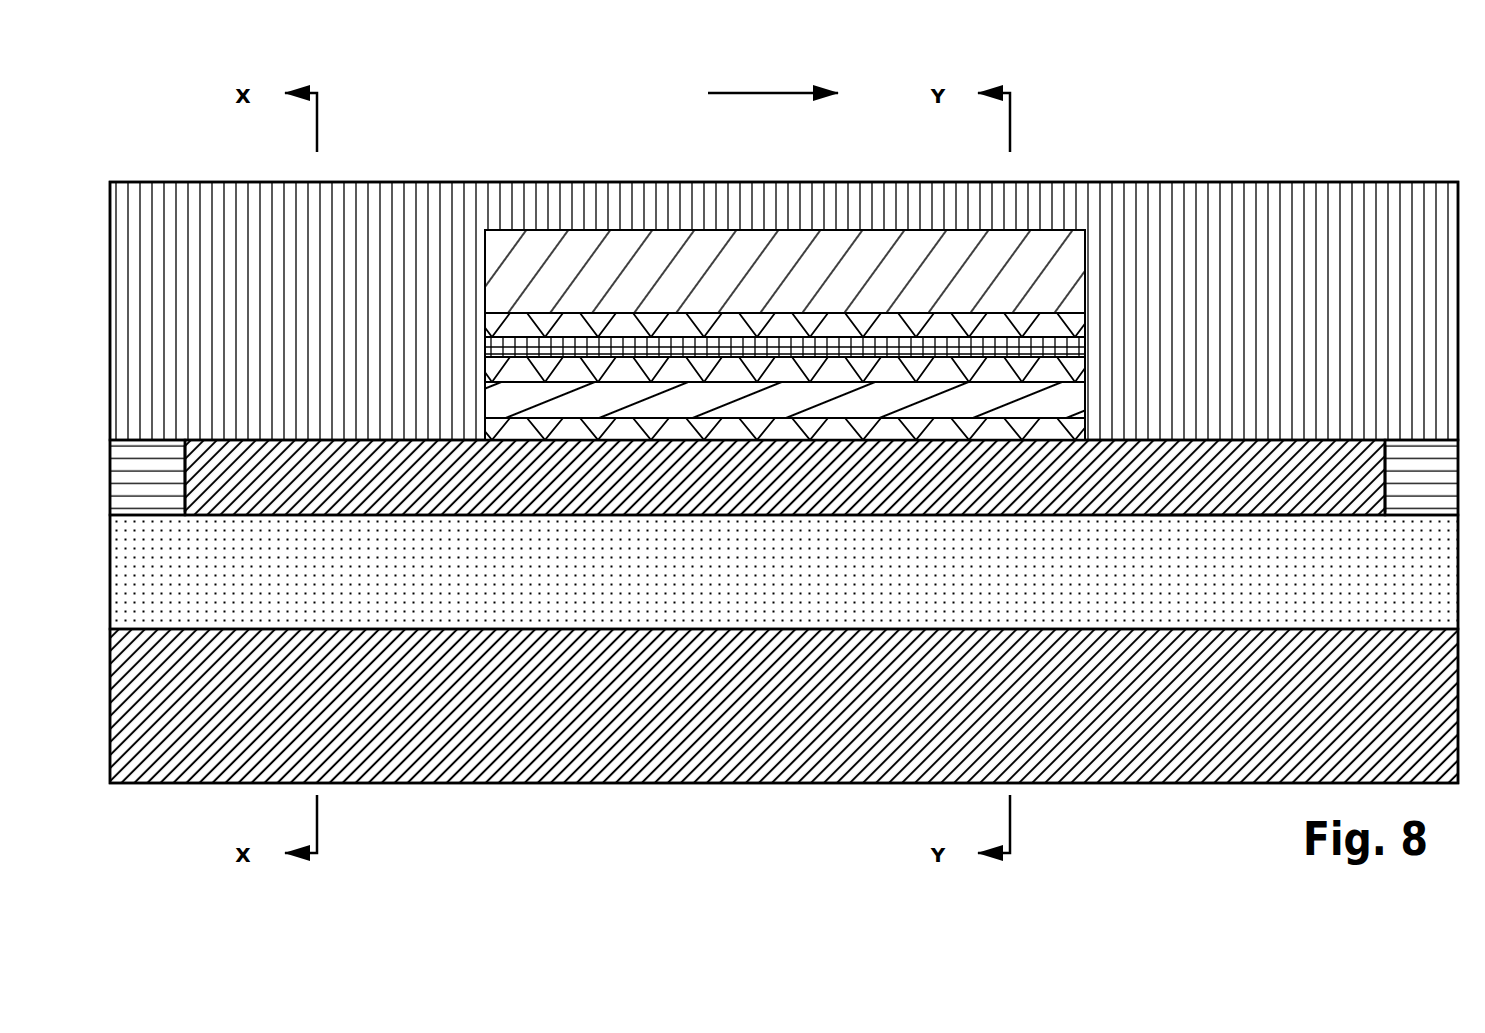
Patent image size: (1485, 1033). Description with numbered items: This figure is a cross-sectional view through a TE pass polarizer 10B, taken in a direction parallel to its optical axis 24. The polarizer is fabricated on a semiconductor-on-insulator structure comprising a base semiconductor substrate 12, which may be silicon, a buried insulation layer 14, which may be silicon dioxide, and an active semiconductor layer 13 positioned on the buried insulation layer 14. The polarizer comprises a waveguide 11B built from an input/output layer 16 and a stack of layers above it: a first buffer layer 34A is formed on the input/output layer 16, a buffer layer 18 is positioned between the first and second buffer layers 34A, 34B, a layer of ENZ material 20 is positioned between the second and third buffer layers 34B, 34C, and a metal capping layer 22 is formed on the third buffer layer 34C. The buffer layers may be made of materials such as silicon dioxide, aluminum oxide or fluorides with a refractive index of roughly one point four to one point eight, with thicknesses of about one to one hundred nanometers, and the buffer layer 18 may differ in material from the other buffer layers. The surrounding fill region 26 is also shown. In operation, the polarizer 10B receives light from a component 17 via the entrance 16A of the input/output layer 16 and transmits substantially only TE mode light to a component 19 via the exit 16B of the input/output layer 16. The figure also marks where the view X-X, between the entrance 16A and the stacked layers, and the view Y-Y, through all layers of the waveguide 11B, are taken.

The TE pass polarizer 10B is at (1306, 113).
The waveguide 11B is at (1156, 263).
The base semiconductor substrate 12 is at (1399, 672).
The active semiconductor layer 13 is at (1230, 497).
The buried insulation layer 14 is at (1399, 599).
The input/output layer 16 is at (784, 487).
The entrance 16A is at (187, 472).
The exit 16B is at (1378, 475).
The component 17 is at (154, 487).
The first buffer layer 18 is at (782, 405).
The component 19 is at (1407, 487).
The layer of ENZ material 20 is at (782, 355).
The metal capping layer 22 is at (782, 277).
The optical axis 24 is at (765, 93).
The dielectric fill 26 is at (289, 255).
The first buffer layer 34A is at (763, 438).
The second buffer layer 34B is at (763, 379).
The third buffer layer 34C is at (763, 334).